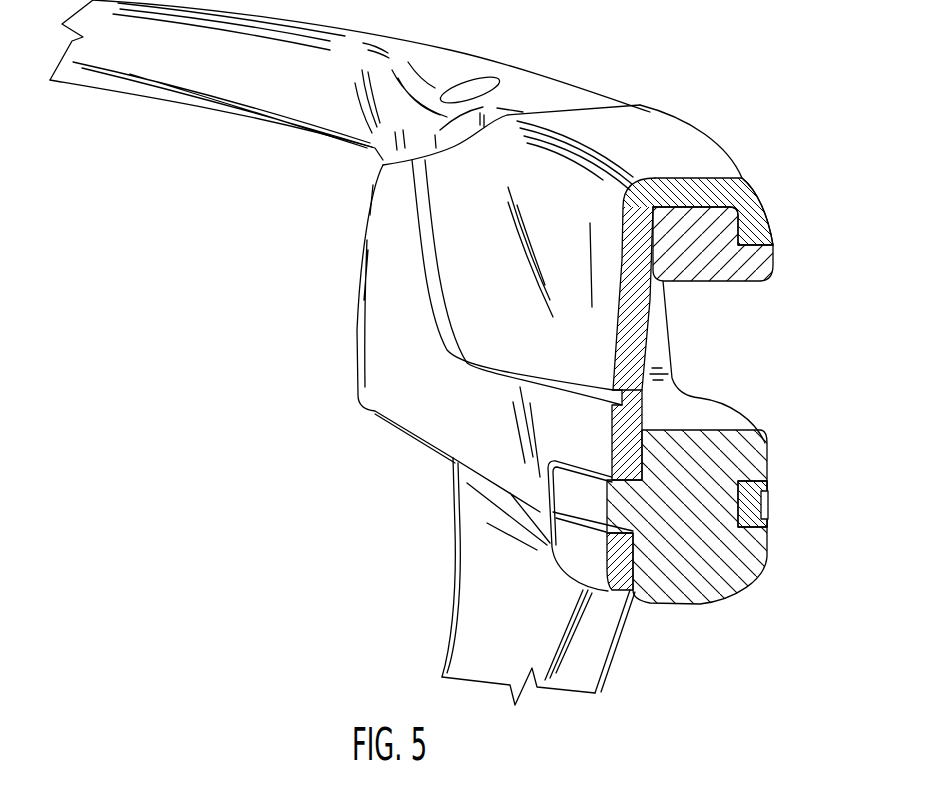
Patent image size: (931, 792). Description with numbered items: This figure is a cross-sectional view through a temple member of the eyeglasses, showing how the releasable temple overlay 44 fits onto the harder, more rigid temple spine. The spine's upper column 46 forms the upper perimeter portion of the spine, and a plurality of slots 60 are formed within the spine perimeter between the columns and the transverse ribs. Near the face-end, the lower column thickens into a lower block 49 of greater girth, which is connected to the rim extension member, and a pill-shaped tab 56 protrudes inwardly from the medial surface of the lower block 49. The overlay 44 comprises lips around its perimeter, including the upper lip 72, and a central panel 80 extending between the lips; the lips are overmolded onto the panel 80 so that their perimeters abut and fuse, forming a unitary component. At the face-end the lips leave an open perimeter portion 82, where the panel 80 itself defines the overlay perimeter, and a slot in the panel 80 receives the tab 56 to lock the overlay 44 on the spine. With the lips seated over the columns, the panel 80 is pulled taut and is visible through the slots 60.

The releasable temple overlay 44 is at (440, 407).
The upper column 46 is at (717, 255).
The pill-shaped tab 56 is at (580, 500).
The slots 60 is at (728, 381).
The upper lip 72 is at (757, 194).
The panel 80 is at (640, 305).
The lower block 49 is at (708, 523).
The open perimeter portion 82 is at (645, 577).